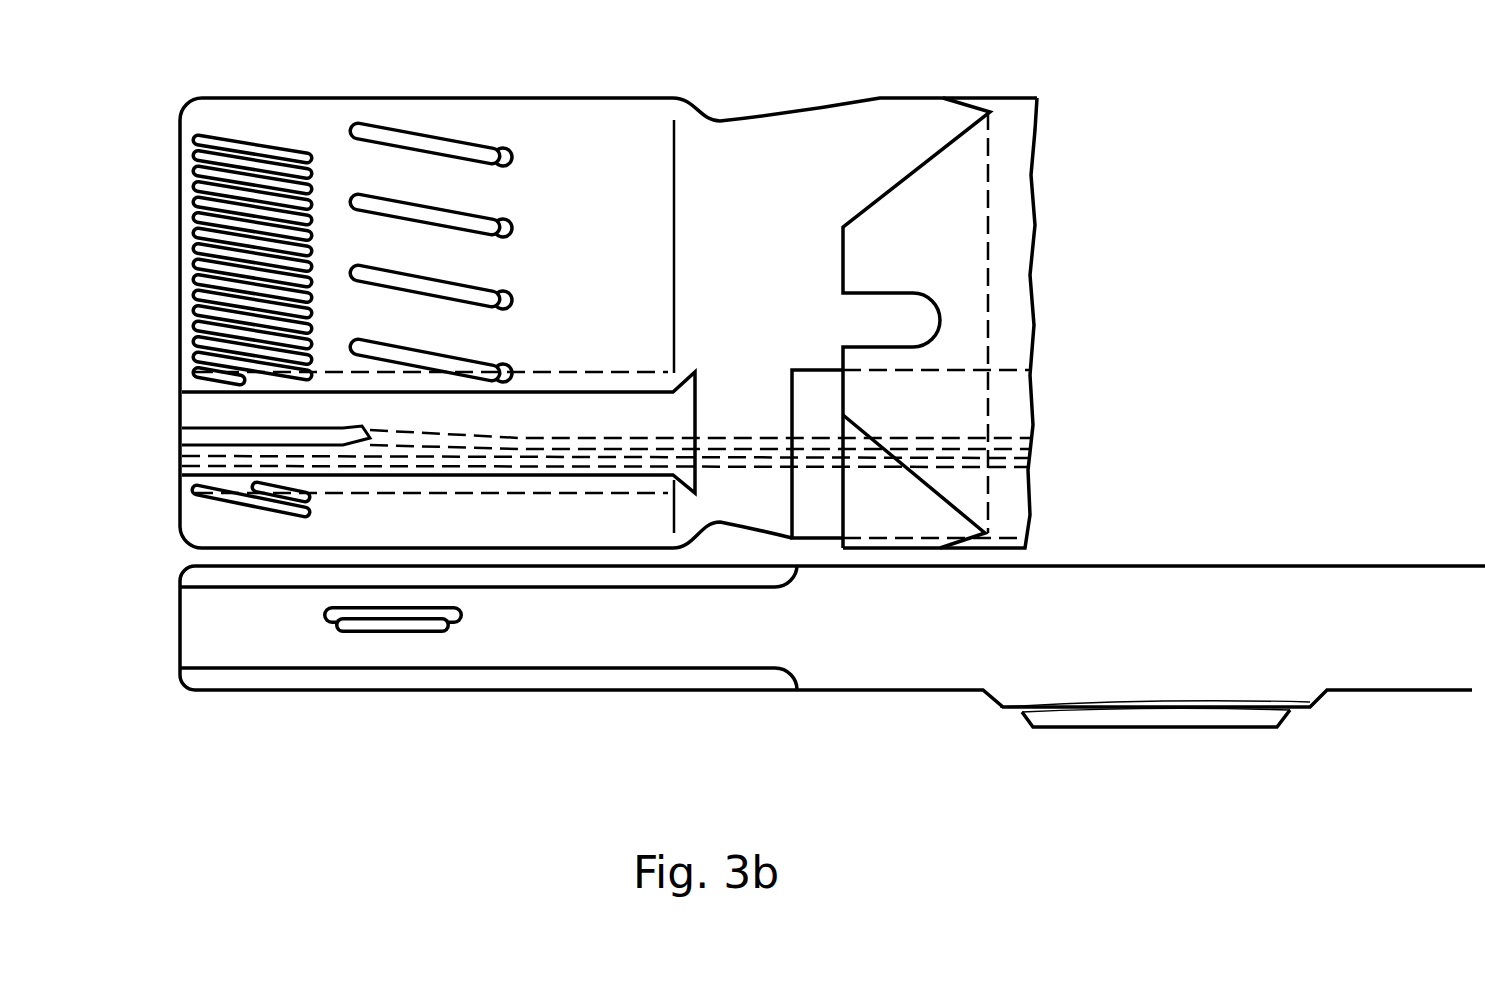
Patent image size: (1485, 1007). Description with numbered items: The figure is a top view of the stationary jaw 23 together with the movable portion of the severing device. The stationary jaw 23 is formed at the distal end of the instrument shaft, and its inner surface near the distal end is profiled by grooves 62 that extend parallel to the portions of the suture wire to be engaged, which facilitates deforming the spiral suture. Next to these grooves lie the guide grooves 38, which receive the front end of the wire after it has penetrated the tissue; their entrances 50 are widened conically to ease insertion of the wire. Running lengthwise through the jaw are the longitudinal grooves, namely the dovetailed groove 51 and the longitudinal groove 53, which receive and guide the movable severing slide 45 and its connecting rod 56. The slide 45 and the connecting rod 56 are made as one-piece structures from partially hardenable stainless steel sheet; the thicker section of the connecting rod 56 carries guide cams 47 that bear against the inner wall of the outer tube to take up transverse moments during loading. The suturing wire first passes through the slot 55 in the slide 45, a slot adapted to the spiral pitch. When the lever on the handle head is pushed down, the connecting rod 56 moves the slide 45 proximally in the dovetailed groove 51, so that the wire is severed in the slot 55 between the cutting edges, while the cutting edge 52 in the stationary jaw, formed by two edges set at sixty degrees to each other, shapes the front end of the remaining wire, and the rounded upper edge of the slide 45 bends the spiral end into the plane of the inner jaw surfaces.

The stationary jaw 23 is at (229, 118).
The grooves 62 is at (230, 273).
The guide grooves 38 is at (393, 205).
The entrances 50 is at (505, 148).
The dovetailed groove 51 is at (207, 410).
The cutting edge 52 is at (343, 446).
The longitudinal groove 53 is at (818, 394).
The movable severing slide 45 is at (207, 650).
The connecting rod 56 is at (1350, 588).
The slot 55 is at (397, 622).
The guide cams 47 is at (1008, 690).